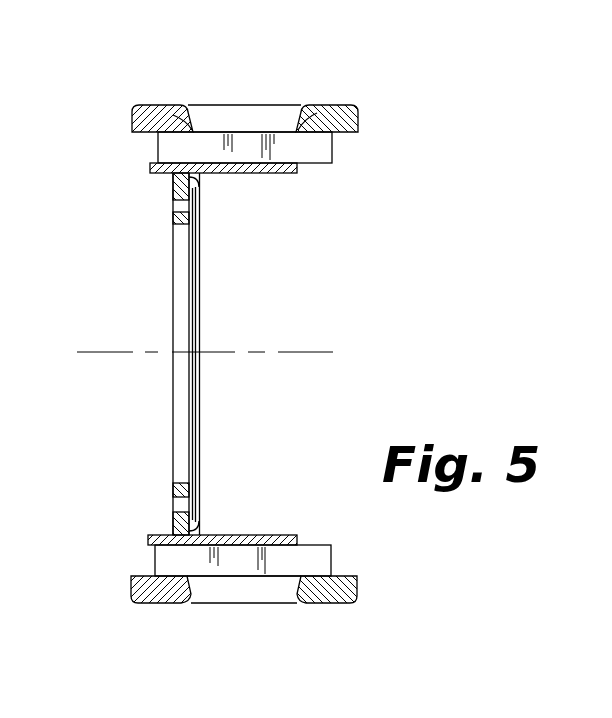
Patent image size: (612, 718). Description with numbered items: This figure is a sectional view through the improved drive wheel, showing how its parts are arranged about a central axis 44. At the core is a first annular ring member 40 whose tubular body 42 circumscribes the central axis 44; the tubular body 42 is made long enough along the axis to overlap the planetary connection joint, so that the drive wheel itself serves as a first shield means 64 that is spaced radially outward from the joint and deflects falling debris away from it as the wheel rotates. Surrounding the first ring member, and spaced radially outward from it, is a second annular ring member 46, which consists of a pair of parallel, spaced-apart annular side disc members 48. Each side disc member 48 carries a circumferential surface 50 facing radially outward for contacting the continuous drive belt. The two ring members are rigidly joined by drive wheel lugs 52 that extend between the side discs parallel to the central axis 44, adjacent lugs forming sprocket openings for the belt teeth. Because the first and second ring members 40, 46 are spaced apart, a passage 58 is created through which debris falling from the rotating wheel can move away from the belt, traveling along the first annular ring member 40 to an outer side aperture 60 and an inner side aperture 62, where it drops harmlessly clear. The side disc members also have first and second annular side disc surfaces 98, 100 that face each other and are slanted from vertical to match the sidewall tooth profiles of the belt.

The first annular ring member 40 is at (288, 177).
The tubular body 42 is at (250, 173).
The central axis 44 is at (133, 350).
The second annular ring member 46 is at (365, 110).
The annular side disc members 48 is at (148, 105).
The circumferential surface 50 is at (155, 603).
The drive wheel lugs 52 is at (228, 125).
The passage 58 is at (200, 158).
The outer side aperture 60 is at (158, 146).
The inner side aperture 62 is at (297, 150).
The first shield means 64 is at (222, 185).
The first annular side disc surface 98 is at (173, 115).
The second annular side disc surface 100 is at (317, 113).